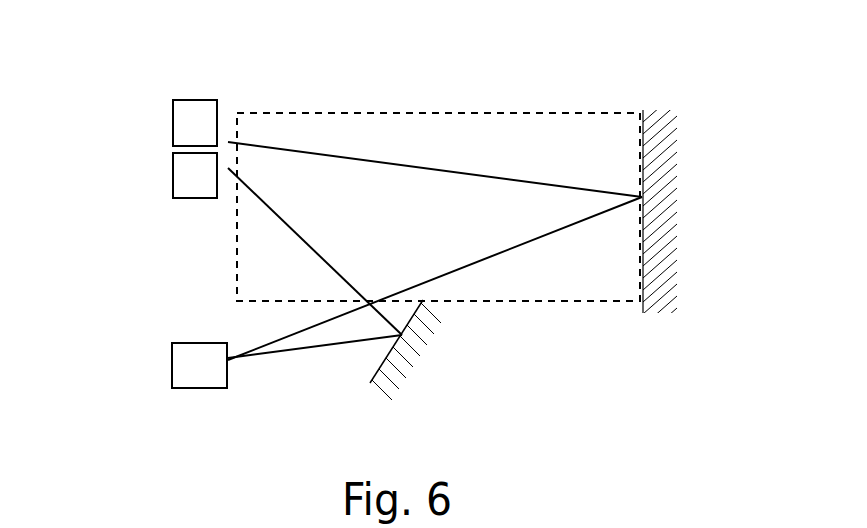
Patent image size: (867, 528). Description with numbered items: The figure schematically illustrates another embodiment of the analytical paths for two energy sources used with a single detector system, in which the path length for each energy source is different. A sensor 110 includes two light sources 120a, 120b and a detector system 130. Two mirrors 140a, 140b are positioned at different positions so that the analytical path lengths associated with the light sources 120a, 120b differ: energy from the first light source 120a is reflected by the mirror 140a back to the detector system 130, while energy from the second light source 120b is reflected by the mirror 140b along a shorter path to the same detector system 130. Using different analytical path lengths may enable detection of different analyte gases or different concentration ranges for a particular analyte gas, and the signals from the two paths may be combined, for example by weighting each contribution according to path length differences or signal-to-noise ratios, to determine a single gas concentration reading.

The sensor 110 is at (378, 70).
The light source 120a is at (172, 92).
The light source 120b is at (167, 178).
The detector system 130 is at (160, 373).
The mirror 140a is at (642, 100).
The mirror 140b is at (360, 397).